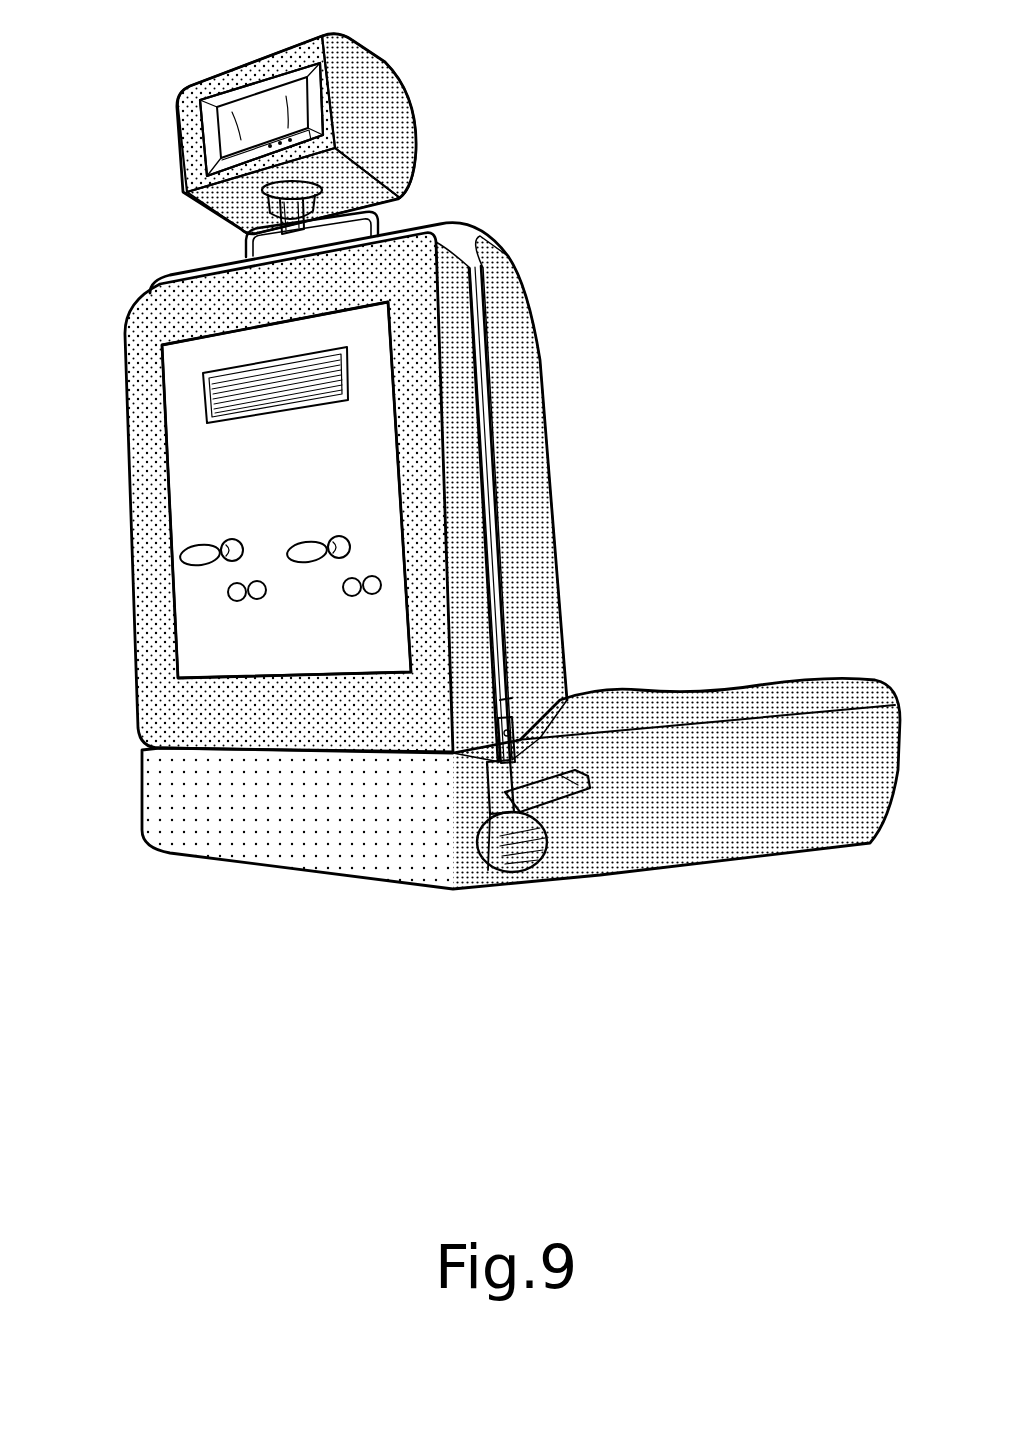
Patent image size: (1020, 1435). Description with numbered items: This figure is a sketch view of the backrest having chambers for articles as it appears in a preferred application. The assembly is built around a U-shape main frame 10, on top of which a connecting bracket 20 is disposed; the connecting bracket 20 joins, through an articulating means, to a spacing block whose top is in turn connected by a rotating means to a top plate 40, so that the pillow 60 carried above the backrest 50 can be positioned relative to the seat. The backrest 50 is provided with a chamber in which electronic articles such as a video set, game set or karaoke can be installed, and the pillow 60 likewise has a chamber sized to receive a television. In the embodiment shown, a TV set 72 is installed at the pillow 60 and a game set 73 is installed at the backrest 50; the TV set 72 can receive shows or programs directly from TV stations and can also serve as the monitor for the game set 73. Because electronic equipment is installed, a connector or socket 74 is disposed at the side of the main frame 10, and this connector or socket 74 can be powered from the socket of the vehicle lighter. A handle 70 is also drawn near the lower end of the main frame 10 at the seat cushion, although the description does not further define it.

The main frame 10 is at (492, 400).
The connecting bracket 20 is at (392, 215).
The top plate 40 is at (247, 204).
The backrest 50 is at (530, 522).
The pillow 60 is at (452, 57).
The recliner adjustment handle 70 is at (457, 818).
The TV set 72 is at (224, 112).
The game set 73 is at (200, 474).
The connector or socket 74 is at (573, 690).